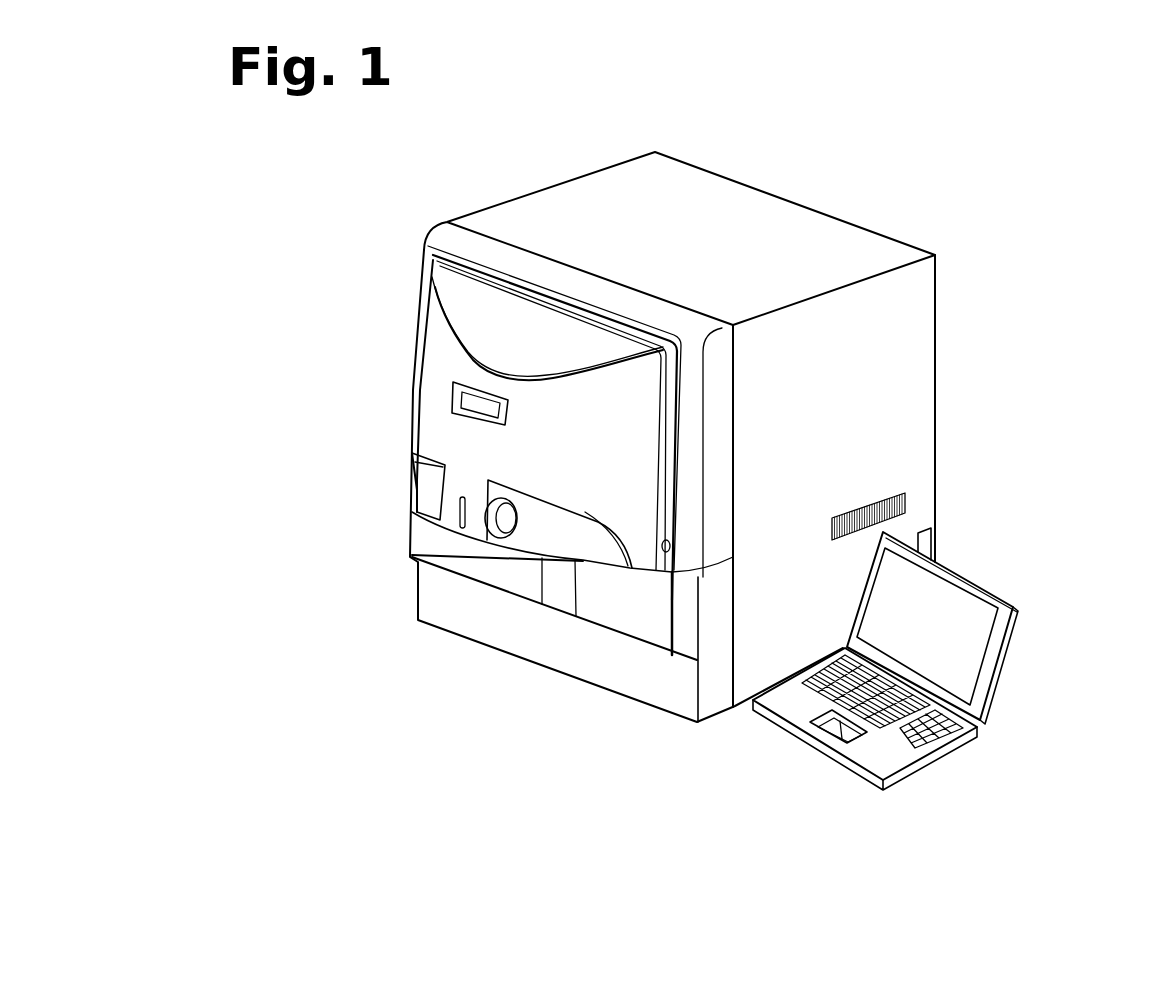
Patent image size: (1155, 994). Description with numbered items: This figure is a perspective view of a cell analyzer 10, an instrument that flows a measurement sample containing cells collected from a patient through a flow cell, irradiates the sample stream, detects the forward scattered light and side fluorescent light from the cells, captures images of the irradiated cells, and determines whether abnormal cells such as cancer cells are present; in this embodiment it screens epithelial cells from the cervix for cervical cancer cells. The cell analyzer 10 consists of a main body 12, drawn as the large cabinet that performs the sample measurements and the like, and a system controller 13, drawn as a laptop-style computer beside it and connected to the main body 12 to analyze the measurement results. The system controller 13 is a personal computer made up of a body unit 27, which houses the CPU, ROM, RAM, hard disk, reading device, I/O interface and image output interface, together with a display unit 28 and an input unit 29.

The cell analyzer 10 is at (385, 265).
The main body 12 is at (437, 405).
The system controller 13 is at (932, 657).
The body unit 27 is at (937, 750).
The display unit 28 is at (958, 645).
The input unit 29 is at (880, 737).